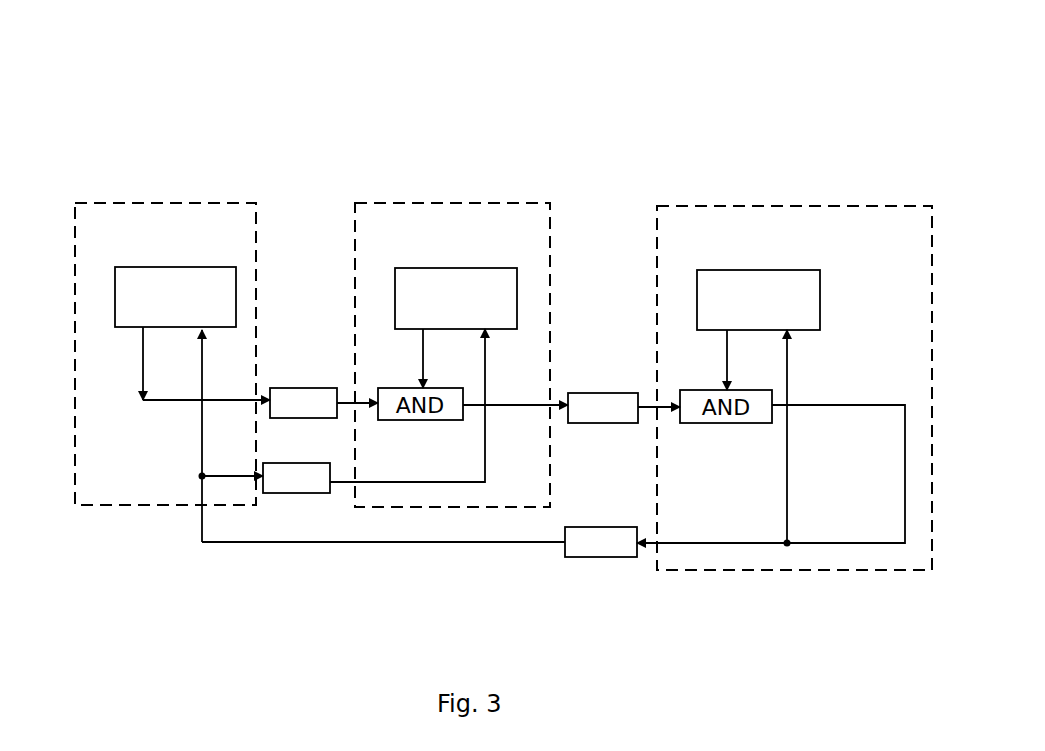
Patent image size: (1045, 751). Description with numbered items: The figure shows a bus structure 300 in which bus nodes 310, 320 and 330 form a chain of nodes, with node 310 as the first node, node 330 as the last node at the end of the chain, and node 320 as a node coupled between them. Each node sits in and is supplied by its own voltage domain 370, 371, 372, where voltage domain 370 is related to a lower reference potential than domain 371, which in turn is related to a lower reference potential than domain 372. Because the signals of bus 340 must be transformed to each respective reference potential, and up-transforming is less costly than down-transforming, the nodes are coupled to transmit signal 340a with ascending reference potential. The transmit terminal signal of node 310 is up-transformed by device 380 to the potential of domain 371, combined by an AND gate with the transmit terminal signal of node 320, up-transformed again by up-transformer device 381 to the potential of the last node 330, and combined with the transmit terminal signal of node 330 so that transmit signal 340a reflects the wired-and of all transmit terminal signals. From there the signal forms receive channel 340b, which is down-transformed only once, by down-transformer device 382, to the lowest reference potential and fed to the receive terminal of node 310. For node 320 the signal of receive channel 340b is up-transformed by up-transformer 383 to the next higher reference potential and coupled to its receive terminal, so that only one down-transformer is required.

The bus structure 300 is at (465, 84).
The bus node 310 is at (173, 308).
The bus node 320 is at (455, 310).
The bus node 330 is at (757, 311).
The bus 340 is at (190, 436).
The transmit signal 340a is at (140, 372).
The receive channel 340b is at (725, 545).
The voltage domain 370 is at (133, 202).
The voltage domain 371 is at (430, 203).
The voltage domain 372 is at (777, 207).
The device 380 is at (324, 403).
The up-transformer device 381 is at (624, 408).
The down-transformer device 382 is at (419, 542).
The up-transformer 383 is at (374, 411).